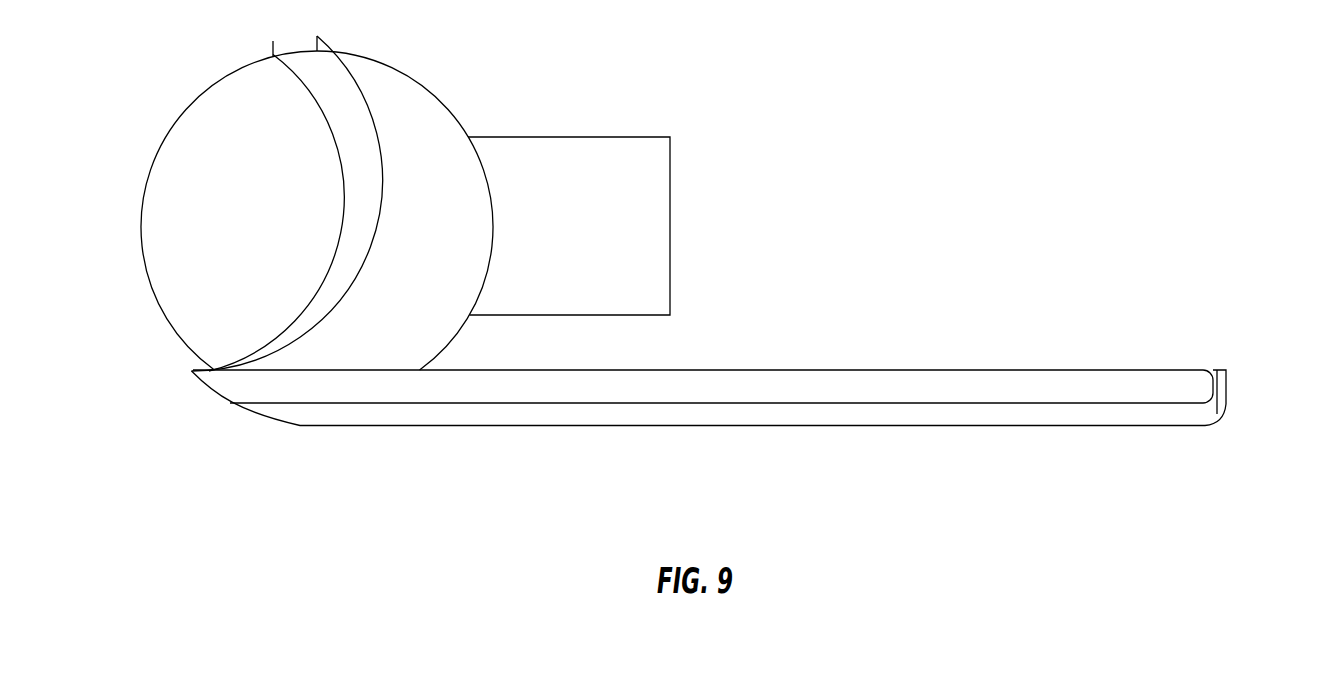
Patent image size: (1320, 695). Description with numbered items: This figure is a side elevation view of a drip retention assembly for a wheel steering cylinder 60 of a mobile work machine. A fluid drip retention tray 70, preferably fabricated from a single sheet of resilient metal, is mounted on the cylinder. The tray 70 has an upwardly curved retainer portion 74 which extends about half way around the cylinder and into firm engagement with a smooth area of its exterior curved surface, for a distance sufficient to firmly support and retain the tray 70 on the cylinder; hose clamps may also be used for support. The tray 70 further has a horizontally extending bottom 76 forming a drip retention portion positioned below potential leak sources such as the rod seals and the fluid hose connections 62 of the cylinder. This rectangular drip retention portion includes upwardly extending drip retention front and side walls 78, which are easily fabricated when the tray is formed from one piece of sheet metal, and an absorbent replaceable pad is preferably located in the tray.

The wheel steering cylinder 60 is at (330, 224).
The fluid hose connections 62 is at (671, 225).
The upwardly curved retainer portion 74 is at (142, 313).
The drip retention front and side walls 78 is at (972, 385).
The fluid drip retention tray 70 is at (920, 415).
The horizontally extending bottom 76 is at (685, 427).